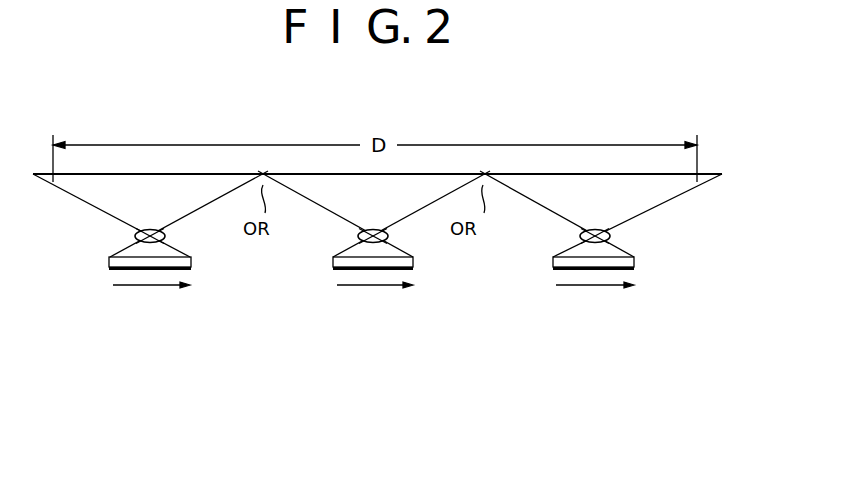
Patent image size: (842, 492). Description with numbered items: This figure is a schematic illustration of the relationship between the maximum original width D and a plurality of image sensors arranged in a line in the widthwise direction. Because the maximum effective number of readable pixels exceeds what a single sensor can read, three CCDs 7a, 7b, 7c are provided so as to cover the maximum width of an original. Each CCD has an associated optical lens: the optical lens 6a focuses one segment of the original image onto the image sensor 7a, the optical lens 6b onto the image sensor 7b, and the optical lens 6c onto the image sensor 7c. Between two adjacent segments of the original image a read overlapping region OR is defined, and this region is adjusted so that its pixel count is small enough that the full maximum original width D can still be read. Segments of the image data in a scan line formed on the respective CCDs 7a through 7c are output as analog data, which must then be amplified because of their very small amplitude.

The optical lens 6a is at (135, 238).
The optical lens 6b is at (358, 240).
The optical lens 6c is at (579, 240).
The CCD 7a is at (109, 272).
The CCD 7b is at (333, 273).
The CCD 7c is at (553, 272).